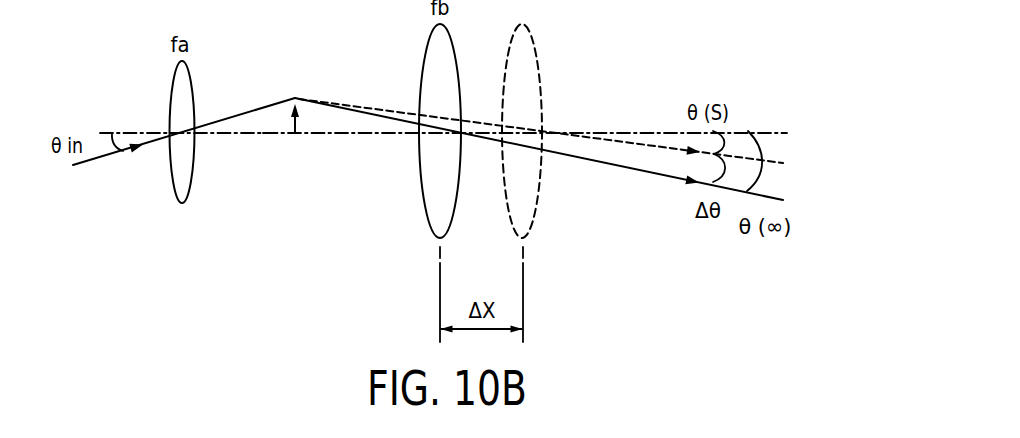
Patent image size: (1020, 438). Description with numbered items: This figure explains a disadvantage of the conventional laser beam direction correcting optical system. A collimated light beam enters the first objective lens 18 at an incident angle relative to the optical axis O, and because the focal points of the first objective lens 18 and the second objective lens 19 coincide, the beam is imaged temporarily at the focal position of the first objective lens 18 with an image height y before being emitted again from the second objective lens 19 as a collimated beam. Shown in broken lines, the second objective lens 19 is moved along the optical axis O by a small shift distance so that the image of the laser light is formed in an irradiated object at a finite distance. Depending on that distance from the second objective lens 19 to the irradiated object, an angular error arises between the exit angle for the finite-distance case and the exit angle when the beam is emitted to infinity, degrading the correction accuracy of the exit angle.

The first objective lens 18 is at (192, 183).
The second objective lens 19 is at (422, 200).
The image height y is at (298, 121).
The optical axis O is at (267, 134).